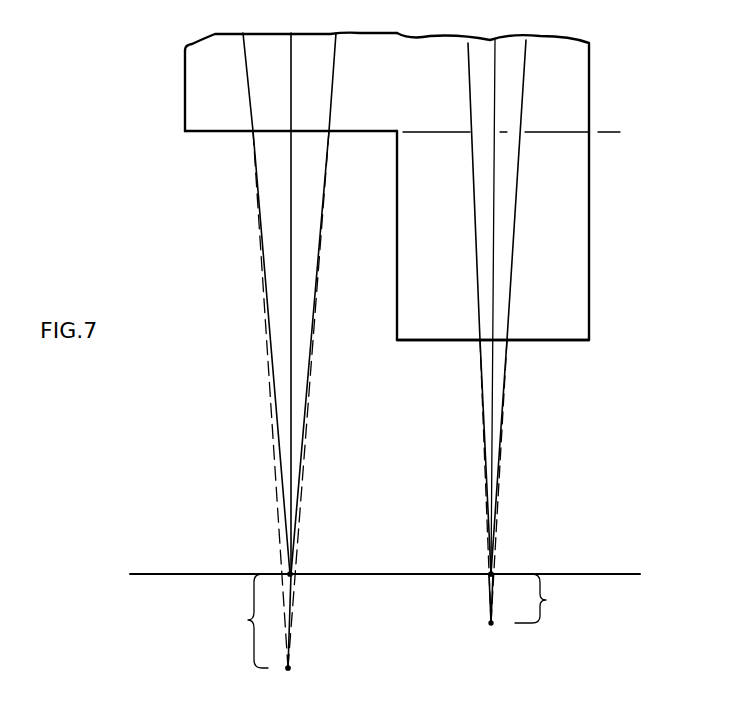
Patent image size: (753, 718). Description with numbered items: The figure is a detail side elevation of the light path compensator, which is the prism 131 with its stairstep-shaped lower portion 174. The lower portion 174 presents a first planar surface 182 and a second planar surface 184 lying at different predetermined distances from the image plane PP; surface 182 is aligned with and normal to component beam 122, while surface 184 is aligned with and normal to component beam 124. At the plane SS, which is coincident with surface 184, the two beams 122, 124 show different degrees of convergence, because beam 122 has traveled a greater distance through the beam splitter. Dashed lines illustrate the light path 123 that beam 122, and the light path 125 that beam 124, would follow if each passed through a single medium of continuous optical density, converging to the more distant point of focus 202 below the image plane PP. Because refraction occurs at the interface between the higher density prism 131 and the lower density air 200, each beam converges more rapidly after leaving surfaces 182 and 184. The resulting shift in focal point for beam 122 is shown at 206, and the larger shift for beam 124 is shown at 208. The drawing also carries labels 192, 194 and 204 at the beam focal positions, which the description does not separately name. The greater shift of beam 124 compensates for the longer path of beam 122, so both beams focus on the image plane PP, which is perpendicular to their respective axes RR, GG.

The prism 131 is at (197, 95).
The stairstep-shaped lower portion 174 is at (567, 72).
The plane SS is at (607, 131).
The second planar surface 184 is at (205, 132).
The axis GG is at (290, 107).
The axis RR is at (496, 305).
The first planar surface 182 is at (575, 342).
The second component beam 124 is at (336, 65).
The light path of beam 124 in a single medium 125 is at (298, 530).
The first focal point 194 is at (292, 573).
The shifted focal point 204 is at (298, 662).
The focal point shift of beam 124 208 is at (226, 621).
The component beam 122 is at (507, 378).
The light path of beam 122 in a single medium 123 is at (503, 427).
The second focal point 192 is at (492, 573).
The point of focus in a single medium 202 is at (488, 620).
The focal point shift of beam 122 206 is at (558, 598).
The image plane PP is at (580, 574).
The air 200 is at (243, 410).